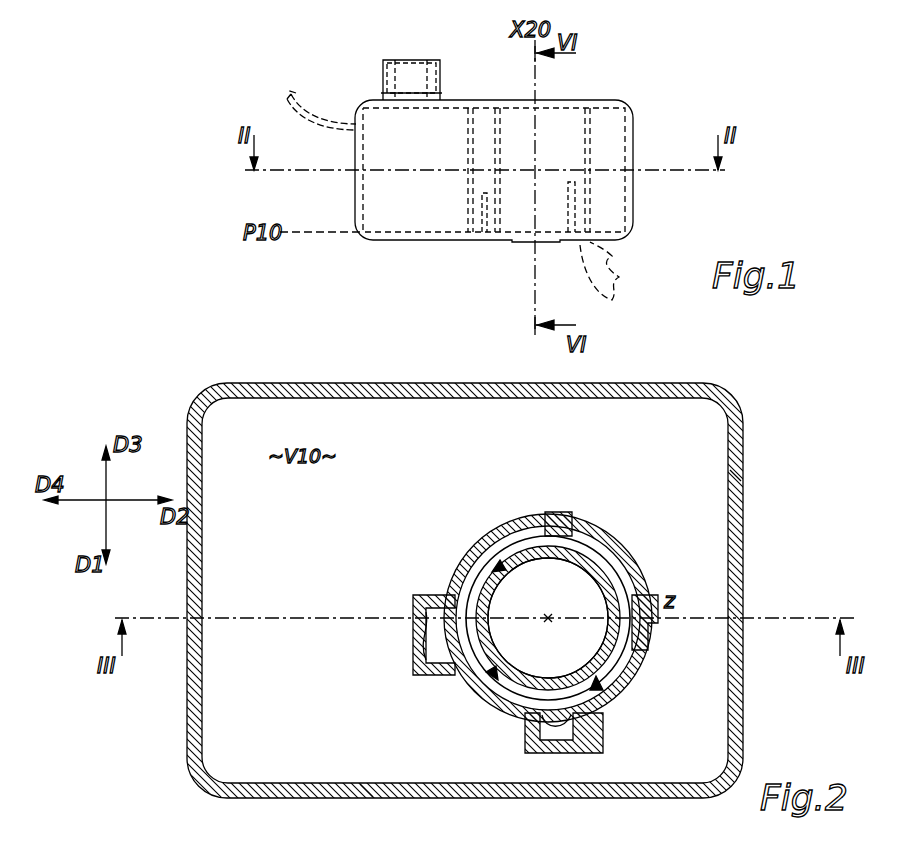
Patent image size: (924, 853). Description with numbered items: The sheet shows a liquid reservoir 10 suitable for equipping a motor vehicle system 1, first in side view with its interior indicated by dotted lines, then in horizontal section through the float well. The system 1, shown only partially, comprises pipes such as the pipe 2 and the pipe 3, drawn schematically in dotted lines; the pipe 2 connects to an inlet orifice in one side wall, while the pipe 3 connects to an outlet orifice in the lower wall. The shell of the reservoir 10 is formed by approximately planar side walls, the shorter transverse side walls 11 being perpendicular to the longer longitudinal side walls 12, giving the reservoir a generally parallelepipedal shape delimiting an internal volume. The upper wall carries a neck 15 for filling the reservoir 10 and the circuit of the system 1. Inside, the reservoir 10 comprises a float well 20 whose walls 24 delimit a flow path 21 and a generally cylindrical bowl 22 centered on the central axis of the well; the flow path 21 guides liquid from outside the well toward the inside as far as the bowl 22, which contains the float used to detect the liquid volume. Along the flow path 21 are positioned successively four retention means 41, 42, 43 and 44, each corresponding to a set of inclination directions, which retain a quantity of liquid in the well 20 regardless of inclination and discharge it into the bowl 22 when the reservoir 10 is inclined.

In FIG. 1, the motor vehicle system 1 is at (243, 98).
In FIG. 1, the pipe 2 is at (290, 101).
In FIG. 1, the pipe 3 is at (610, 270).
In FIG. 1, the reservoir 10 is at (628, 106).
In FIG. 2, the reservoir 10 is at (170, 390).
In FIG. 2, the side wall 11 is at (744, 492).
In FIG. 2, the side wall 12 is at (372, 797).
In FIG. 1, the neck 15 is at (385, 78).
In FIG. 2, the float well 20 is at (430, 715).
In FIG. 2, the flow path 21 is at (554, 618).
In FIG. 2, the bowl 22 is at (596, 577).
In FIG. 2, the walls 24 is at (484, 541).
In FIG. 2, the retention means 41 is at (556, 513).
In FIG. 2, the retention means 42 is at (420, 609).
In FIG. 2, the retention means 43 is at (535, 732).
In FIG. 2, the retention means 44 is at (634, 601).